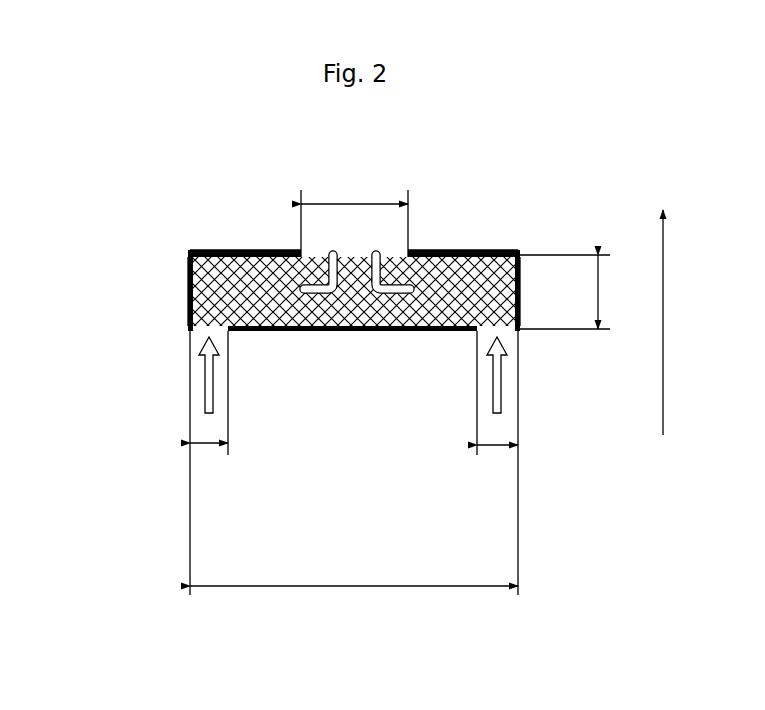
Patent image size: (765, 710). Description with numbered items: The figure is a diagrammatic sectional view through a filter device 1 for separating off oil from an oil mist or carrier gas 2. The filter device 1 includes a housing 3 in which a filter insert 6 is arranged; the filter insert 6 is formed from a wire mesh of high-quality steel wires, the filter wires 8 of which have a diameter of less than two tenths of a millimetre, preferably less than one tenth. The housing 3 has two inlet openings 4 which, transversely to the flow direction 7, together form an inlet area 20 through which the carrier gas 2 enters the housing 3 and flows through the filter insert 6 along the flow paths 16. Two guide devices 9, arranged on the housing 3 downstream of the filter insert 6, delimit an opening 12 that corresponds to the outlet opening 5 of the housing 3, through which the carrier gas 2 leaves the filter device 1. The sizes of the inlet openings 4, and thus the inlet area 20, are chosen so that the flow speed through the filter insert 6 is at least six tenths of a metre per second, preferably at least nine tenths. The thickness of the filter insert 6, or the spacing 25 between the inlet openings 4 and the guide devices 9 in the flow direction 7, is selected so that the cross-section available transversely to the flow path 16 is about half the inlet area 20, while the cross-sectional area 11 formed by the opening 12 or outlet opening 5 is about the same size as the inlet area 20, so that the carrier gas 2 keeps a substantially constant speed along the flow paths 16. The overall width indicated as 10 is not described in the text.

The filter device 1 is at (165, 347).
The carrier gas 2 is at (497, 398).
The housing 3 is at (188, 277).
The inlet openings 4 is at (216, 334).
The outlet opening 5 is at (303, 248).
The filter insert 6 is at (521, 277).
The flow direction 7 is at (676, 322).
The filter wires 8 is at (188, 302).
The guide devices 9 is at (229, 250).
The total width 10 is at (354, 601).
The cross-sectional area 11 is at (354, 213).
The opening 12 is at (410, 243).
The flow paths 16 is at (425, 285).
The inlet area 20 is at (482, 450).
The spacing 25 is at (576, 292).